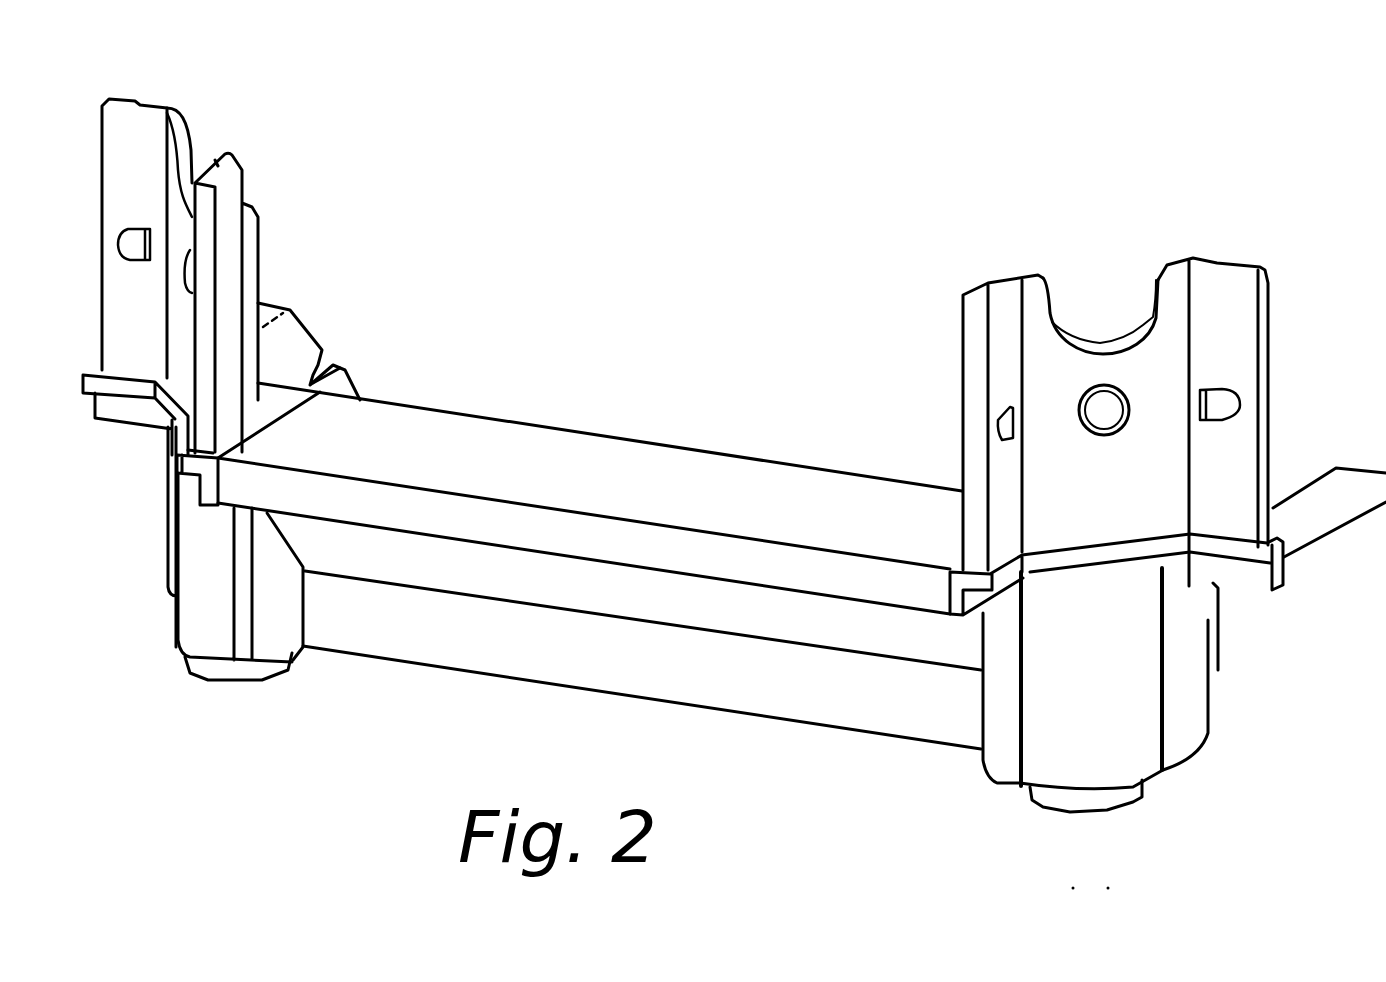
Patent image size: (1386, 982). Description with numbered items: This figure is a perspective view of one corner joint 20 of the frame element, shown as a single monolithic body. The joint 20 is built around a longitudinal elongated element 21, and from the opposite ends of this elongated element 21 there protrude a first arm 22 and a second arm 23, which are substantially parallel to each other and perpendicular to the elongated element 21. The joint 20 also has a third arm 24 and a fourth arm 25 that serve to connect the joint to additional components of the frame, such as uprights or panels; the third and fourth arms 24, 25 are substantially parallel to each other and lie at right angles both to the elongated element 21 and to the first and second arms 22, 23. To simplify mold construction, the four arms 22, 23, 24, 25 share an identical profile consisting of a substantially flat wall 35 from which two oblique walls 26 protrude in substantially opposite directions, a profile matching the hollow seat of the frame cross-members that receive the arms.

The corner joint 20 is at (734, 416).
The longitudinal elongated element 21 is at (599, 536).
The first arm 22 is at (329, 313).
The second arm 23 is at (1329, 451).
The third arm 24 is at (257, 389).
The fourth arm 25 is at (1159, 671).
The oblique walls 26 is at (683, 317).
The flat wall 35 is at (662, 189).